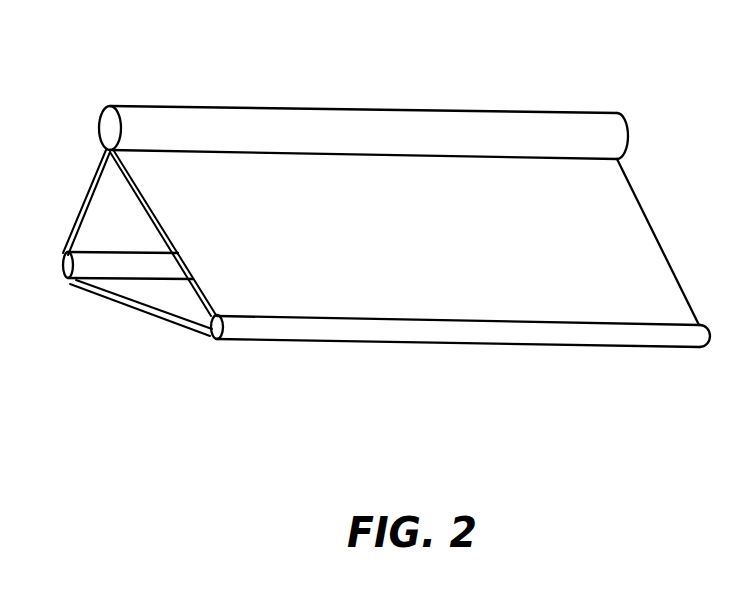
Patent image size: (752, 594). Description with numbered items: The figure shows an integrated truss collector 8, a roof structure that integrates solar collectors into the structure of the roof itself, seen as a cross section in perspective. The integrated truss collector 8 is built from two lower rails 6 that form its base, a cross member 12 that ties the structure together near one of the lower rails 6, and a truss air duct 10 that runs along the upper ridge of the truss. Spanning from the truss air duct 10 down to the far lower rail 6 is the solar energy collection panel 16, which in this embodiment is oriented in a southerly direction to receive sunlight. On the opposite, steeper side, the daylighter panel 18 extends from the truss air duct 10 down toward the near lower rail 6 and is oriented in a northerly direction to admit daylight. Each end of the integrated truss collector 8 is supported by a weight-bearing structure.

The integrated truss collector 8 is at (720, 412).
The truss air duct 10 is at (140, 106).
The lower rails 6 is at (64, 275).
The cross member 12 is at (135, 305).
The solar energy collection panel 16 is at (310, 250).
The daylighter panel 18 is at (88, 186).